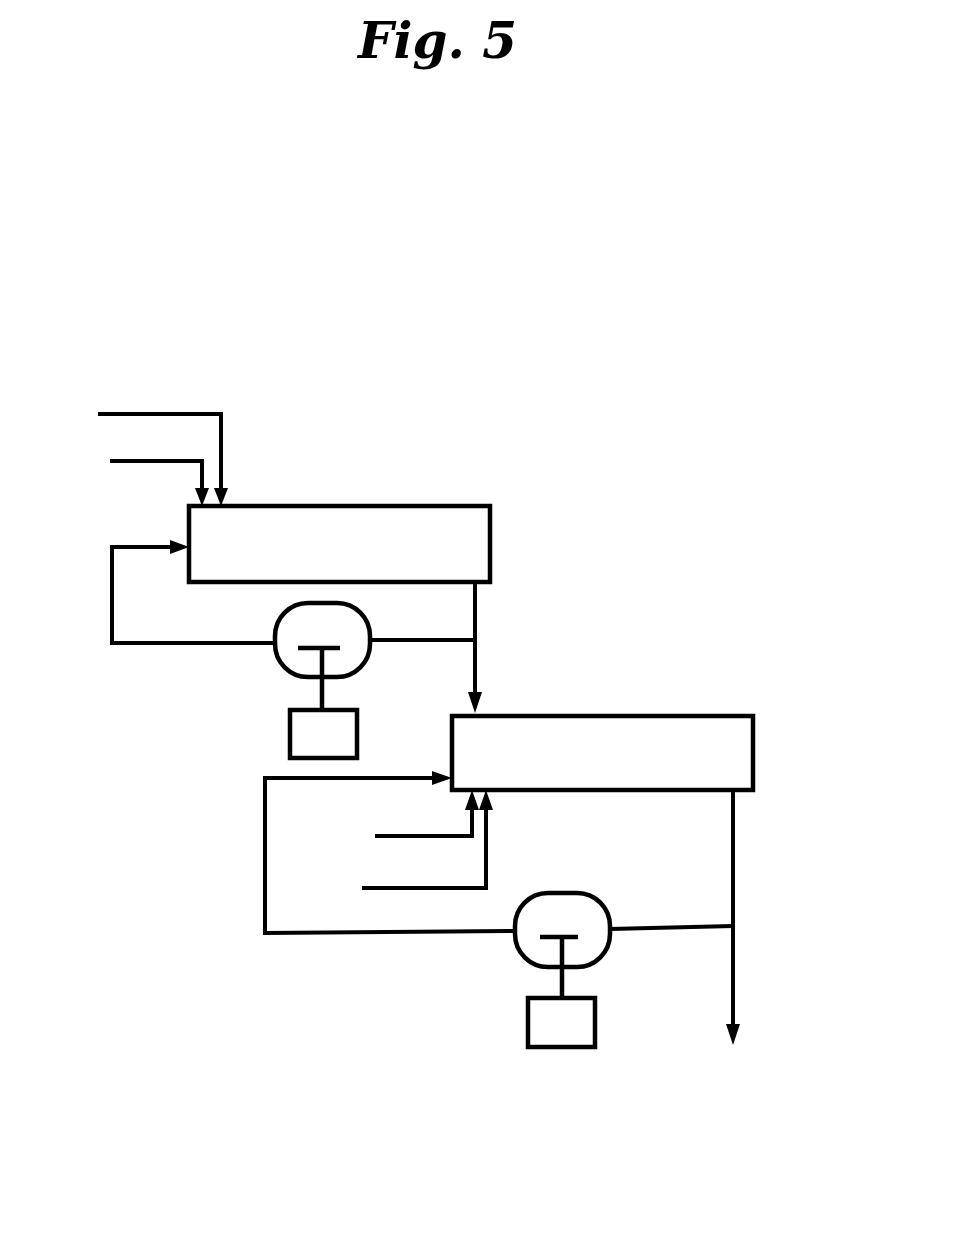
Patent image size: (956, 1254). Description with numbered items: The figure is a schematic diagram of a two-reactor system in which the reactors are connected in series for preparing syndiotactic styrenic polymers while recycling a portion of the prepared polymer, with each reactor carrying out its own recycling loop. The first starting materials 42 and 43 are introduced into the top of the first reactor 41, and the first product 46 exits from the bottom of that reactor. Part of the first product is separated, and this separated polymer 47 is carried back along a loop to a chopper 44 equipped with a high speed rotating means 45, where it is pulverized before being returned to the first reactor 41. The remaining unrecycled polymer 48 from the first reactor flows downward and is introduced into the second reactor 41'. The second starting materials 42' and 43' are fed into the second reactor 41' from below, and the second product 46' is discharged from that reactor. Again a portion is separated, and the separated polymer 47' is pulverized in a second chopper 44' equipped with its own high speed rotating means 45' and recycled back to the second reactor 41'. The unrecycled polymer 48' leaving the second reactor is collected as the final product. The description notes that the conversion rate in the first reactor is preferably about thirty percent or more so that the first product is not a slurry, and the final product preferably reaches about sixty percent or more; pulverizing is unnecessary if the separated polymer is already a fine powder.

The first reactor 41 is at (339, 519).
The first starting material 42 is at (136, 480).
The first starting material 43 is at (140, 453).
The chopper 44 is at (241, 635).
The high speed rotating means 45 is at (270, 752).
The first product 46 is at (503, 638).
The separated polymer 47 is at (422, 655).
The unrecycled polymer 48 is at (506, 680).
The second reactor 41' is at (618, 723).
The second starting material 42' is at (400, 825).
The second starting material 43' is at (403, 851).
The chopper 44' is at (437, 902).
The high speed rotating means 45' is at (514, 1046).
The second product 46' is at (779, 908).
The separated polymer 47' is at (671, 965).
The unrecycled polymer 48' is at (778, 988).